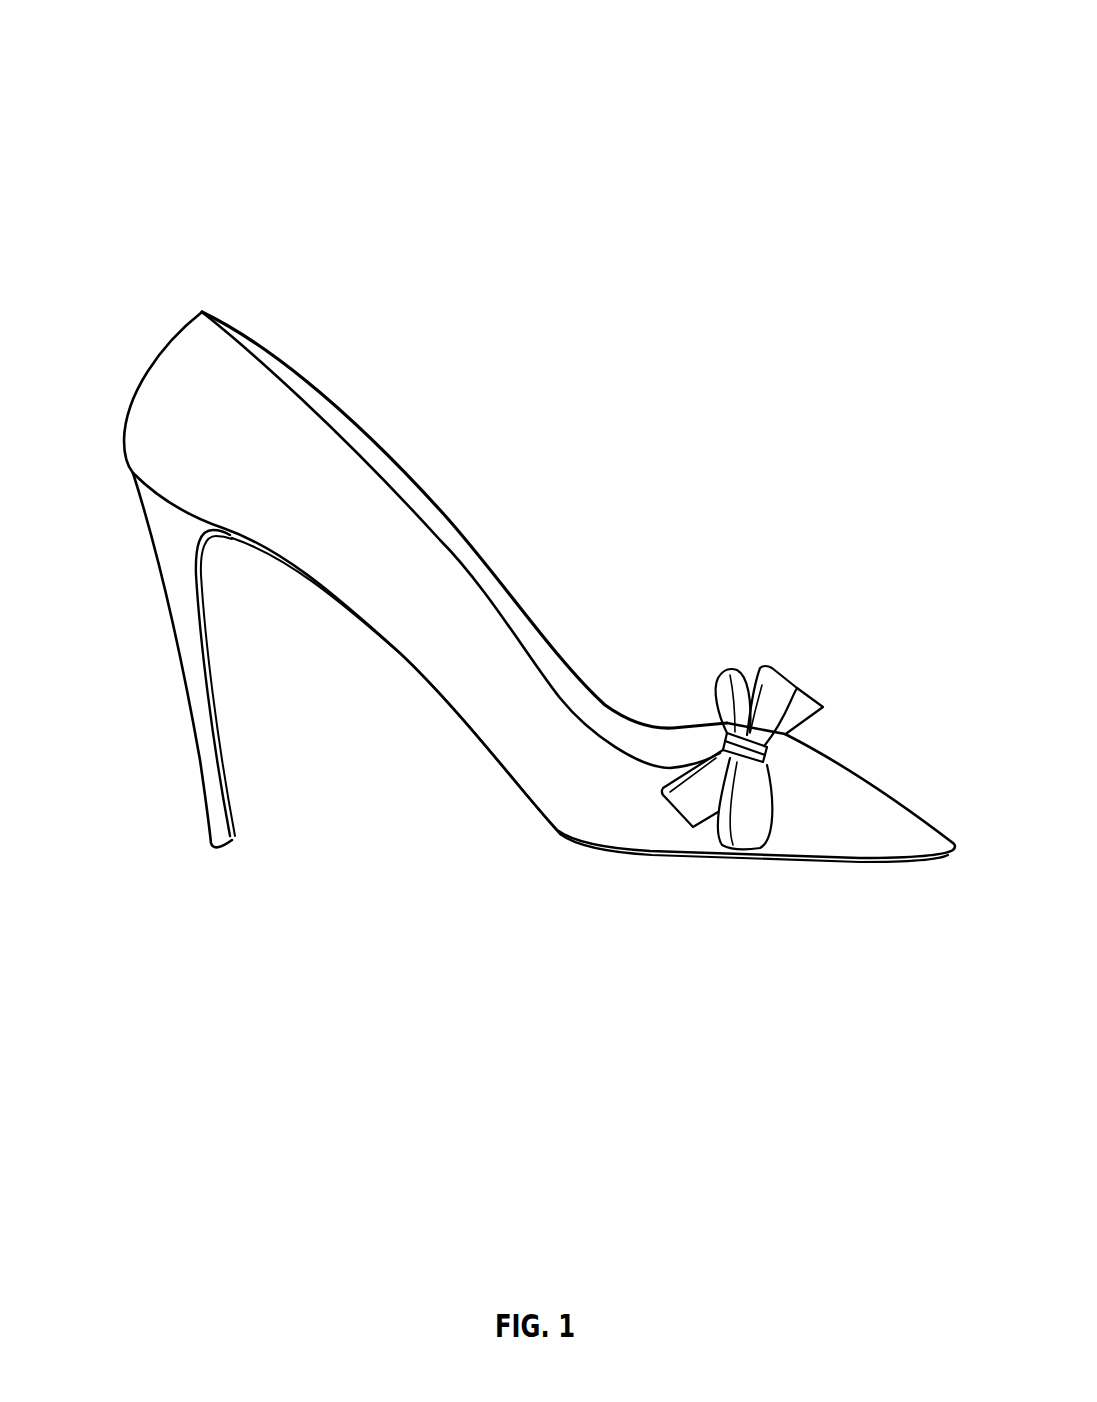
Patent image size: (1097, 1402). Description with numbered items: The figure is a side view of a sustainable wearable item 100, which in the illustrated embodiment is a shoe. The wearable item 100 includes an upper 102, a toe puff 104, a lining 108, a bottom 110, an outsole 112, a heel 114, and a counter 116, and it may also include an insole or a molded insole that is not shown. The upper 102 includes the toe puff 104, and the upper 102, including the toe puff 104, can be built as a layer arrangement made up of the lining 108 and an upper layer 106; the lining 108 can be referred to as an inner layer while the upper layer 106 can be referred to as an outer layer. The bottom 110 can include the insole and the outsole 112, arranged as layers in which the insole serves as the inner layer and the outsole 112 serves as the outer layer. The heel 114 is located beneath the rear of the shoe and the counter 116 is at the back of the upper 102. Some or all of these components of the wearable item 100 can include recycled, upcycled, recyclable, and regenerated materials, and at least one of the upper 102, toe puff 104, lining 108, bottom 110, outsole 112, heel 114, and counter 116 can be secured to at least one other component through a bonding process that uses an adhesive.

The sustainable wearable item 100 is at (875, 64).
The upper 102 is at (755, 621).
The toe puff 104 is at (902, 754).
The upper layer 106 is at (838, 824).
The lining 108 is at (620, 727).
The bottom 110 is at (394, 705).
The outsole 112 is at (463, 732).
The heel 114 is at (163, 738).
The counter 116 is at (138, 344).